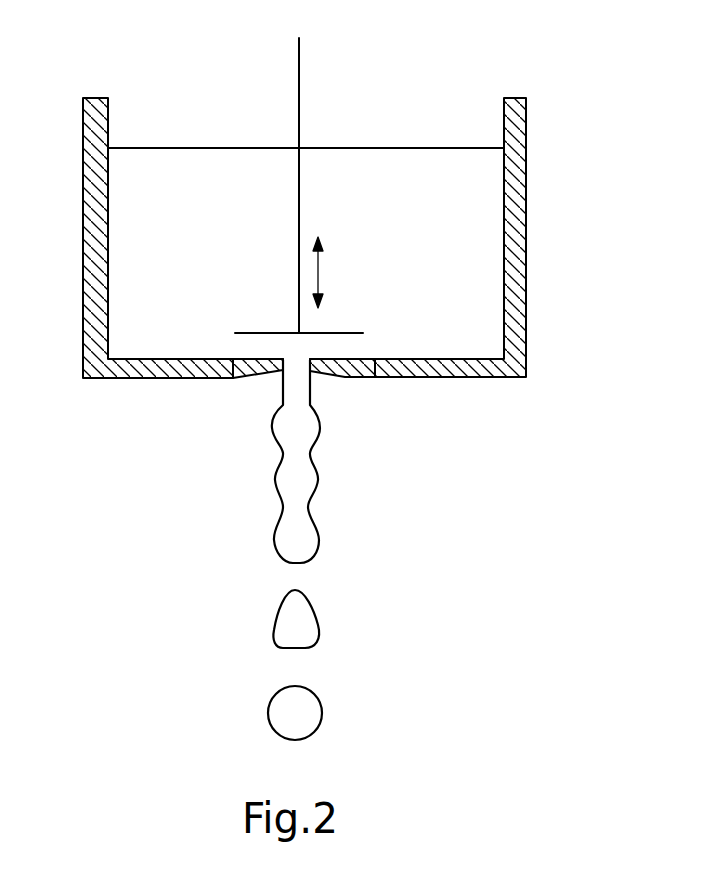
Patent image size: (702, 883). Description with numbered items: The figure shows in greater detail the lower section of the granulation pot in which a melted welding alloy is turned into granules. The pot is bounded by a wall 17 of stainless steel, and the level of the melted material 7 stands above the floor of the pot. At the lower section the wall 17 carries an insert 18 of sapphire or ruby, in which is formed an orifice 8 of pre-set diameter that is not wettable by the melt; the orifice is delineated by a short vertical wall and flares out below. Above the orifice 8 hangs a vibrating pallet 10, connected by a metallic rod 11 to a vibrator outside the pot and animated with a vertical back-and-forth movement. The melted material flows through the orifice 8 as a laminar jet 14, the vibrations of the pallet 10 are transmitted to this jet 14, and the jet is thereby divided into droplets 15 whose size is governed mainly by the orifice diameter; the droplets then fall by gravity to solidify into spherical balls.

The melt bath surface 7 is at (458, 148).
The orifice 8 is at (302, 362).
The vibrating pallet 10 is at (363, 332).
The metallic rod 11 is at (299, 65).
The laminar jet 14 is at (300, 392).
The droplets 15 is at (305, 705).
The wall 17 is at (520, 262).
The insert 18 is at (252, 378).